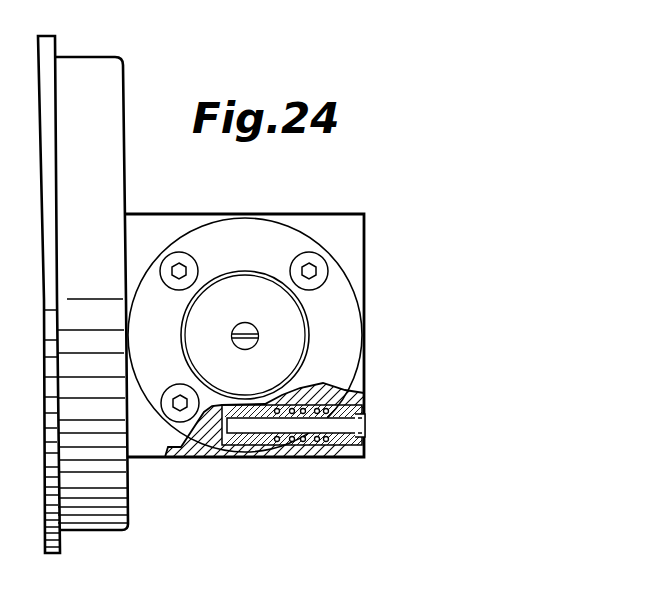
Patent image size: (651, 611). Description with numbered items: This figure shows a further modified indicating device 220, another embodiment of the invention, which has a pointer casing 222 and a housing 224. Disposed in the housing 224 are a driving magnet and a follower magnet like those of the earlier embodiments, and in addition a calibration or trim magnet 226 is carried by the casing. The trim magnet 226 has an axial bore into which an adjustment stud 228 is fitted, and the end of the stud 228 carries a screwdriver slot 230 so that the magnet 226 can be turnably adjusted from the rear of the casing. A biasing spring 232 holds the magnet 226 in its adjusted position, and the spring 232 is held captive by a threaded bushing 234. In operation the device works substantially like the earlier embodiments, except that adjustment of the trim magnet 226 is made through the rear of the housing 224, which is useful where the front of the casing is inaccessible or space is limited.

The indicating device 220 is at (169, 206).
The pointer casing 222 is at (110, 82).
The housing 224 is at (352, 242).
The calibration or trim magnet 226 is at (241, 445).
The adjustment stud 228 is at (304, 426).
The screwdriver slot 230 is at (367, 421).
The biasing spring 232 is at (338, 445).
The threaded bushing 234 is at (360, 392).